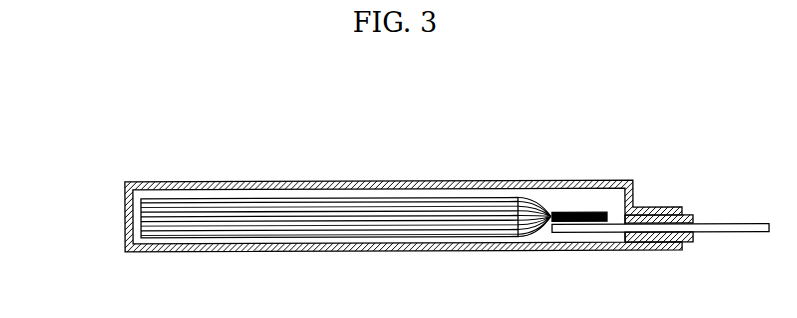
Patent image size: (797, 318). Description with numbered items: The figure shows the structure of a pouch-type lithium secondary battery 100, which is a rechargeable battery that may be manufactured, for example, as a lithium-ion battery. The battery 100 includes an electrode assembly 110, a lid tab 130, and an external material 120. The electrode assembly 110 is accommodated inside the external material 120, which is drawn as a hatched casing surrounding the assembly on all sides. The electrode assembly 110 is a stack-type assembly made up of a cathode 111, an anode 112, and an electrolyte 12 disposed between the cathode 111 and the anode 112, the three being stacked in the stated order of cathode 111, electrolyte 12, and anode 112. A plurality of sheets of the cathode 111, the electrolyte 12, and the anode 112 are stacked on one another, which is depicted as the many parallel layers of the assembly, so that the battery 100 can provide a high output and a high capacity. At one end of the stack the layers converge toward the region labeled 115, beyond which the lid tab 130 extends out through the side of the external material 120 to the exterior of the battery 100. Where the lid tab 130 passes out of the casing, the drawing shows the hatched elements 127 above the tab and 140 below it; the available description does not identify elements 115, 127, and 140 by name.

The pouch-type lithium secondary battery 100 is at (710, 161).
The electrode assembly 110 is at (314, 192).
The cathode 111 is at (142, 203).
The electrolyte 12 is at (142, 207).
The anode 112 is at (142, 212).
The electrode tab 115 is at (535, 208).
The external material 120 is at (311, 179).
The first sealing member 127 is at (658, 207).
The lid tab 130 is at (755, 233).
The second sealing member 140 is at (667, 243).